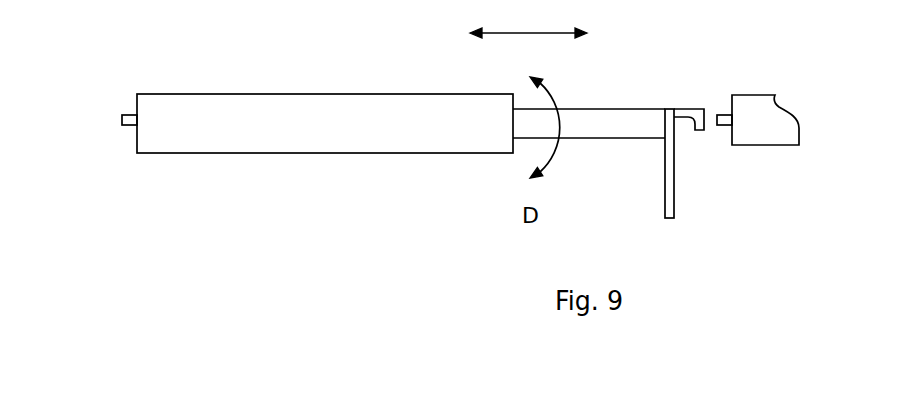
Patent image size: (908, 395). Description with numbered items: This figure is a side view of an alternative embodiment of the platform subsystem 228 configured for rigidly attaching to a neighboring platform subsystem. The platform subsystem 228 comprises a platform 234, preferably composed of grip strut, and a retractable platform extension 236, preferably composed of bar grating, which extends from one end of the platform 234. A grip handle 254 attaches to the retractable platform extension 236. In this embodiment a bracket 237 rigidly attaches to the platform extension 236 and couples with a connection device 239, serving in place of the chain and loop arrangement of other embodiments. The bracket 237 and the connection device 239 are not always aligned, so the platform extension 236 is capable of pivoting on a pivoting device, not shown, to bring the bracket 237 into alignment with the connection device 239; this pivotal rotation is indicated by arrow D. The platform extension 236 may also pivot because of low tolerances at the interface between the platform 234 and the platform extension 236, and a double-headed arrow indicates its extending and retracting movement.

The platform subsystem 228 is at (316, 244).
The platform 234 is at (427, 94).
The retractable platform extension 236 is at (650, 138).
The bracket 237 is at (689, 109).
The connection device 239 is at (128, 114).
The grip handle 254 is at (665, 182).